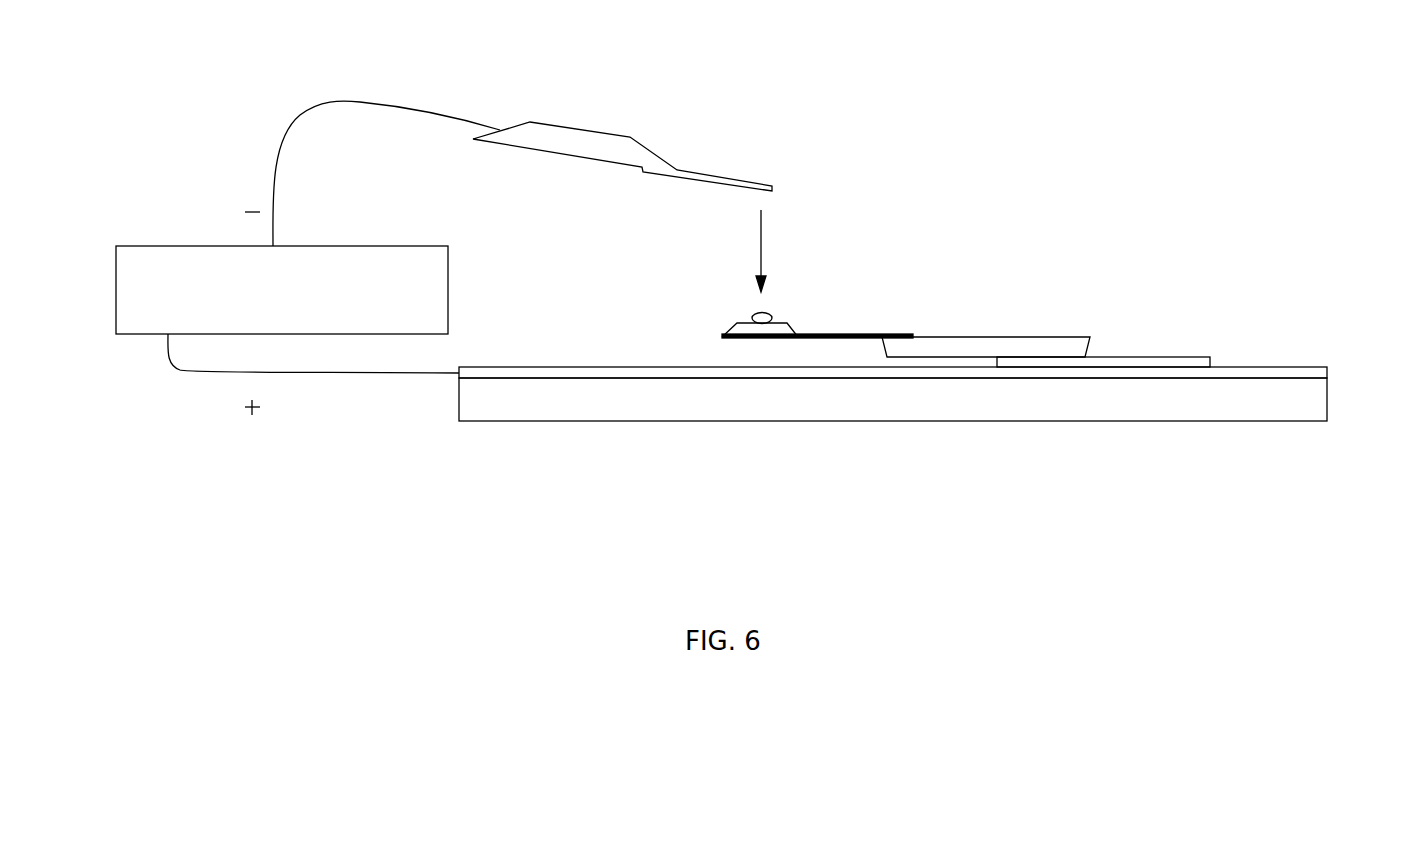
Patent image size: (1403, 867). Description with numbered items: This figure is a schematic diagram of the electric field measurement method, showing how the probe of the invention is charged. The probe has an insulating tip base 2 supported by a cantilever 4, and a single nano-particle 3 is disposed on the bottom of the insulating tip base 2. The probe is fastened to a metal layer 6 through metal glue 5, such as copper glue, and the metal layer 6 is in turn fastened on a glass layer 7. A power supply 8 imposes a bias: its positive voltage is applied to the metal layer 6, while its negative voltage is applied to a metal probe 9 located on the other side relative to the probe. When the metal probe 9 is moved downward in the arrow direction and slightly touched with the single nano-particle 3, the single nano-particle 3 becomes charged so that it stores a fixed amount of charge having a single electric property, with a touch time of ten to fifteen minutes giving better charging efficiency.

The insulating tip base 2 is at (688, 323).
The single nano-particle 3 is at (768, 312).
The cantilever 4 is at (865, 334).
The metal glue 5 is at (1143, 356).
The metal layer 6 is at (1275, 366).
The glass layer 7 is at (1260, 422).
The power supply 8 is at (173, 246).
The metal probe 9 is at (730, 122).